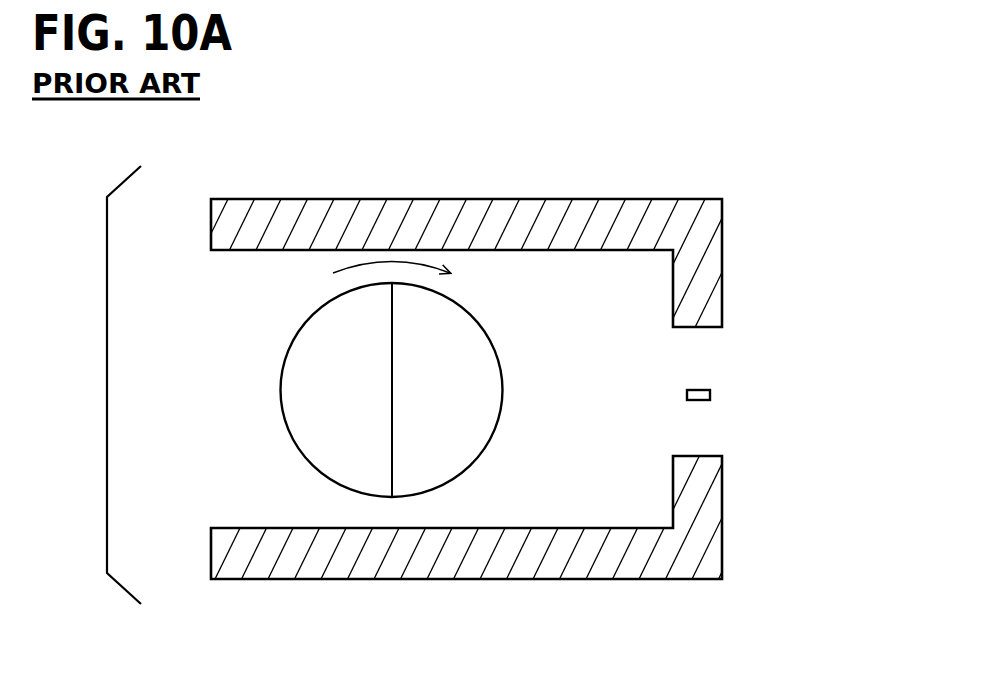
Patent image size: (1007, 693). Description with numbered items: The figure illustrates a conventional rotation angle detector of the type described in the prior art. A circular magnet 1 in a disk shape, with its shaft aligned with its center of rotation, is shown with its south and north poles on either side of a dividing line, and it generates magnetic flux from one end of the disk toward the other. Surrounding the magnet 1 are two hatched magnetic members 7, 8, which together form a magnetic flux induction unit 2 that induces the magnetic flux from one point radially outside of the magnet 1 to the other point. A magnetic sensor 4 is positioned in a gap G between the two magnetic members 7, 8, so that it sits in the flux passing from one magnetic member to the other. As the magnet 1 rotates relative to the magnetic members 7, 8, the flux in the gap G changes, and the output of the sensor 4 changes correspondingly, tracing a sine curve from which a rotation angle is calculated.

The circular magnet 1 is at (312, 326).
The magnetic flux induction unit 2 is at (499, 378).
The magnetic member 7 is at (543, 209).
The magnetic member 8 is at (540, 570).
The magnetic sensor 4 is at (700, 400).
The gap G is at (677, 378).